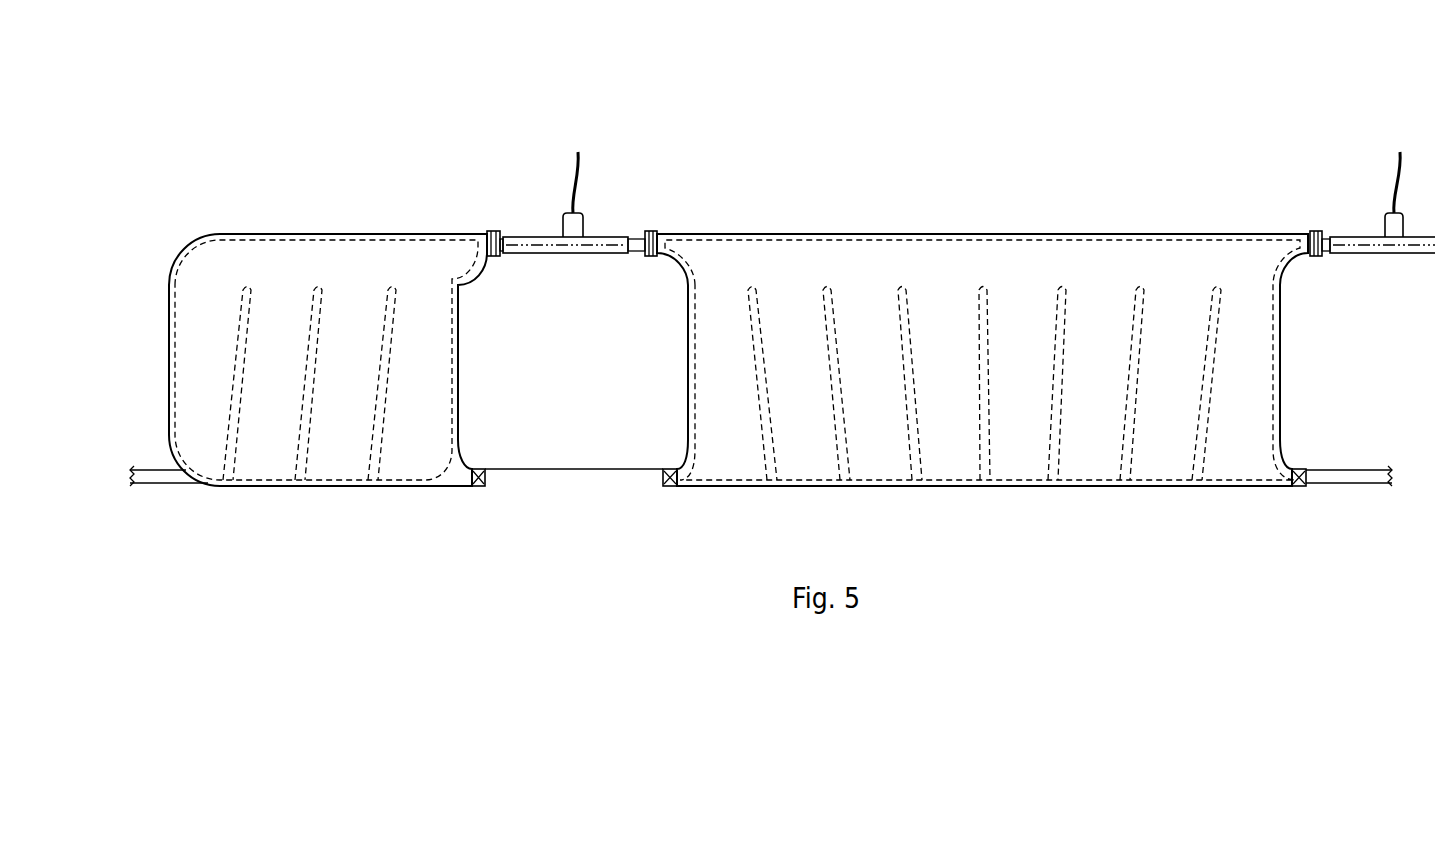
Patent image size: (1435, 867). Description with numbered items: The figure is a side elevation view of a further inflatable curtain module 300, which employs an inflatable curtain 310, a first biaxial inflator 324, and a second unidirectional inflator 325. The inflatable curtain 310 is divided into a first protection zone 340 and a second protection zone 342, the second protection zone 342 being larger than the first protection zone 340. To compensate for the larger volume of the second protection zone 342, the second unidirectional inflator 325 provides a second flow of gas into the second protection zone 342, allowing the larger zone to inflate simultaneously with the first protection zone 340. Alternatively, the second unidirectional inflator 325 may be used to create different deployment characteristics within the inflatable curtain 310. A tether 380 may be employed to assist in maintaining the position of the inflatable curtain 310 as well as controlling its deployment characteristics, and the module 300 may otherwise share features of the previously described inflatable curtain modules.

The inflatable curtain module 300 is at (872, 147).
The inflatable curtain 310 is at (918, 186).
The first biaxial inflator 324 is at (542, 243).
The second unidirectional inflator 325 is at (1363, 243).
The first protection zone 340 is at (267, 402).
The second protection zone 342 is at (1019, 422).
The tether 380 is at (161, 478).